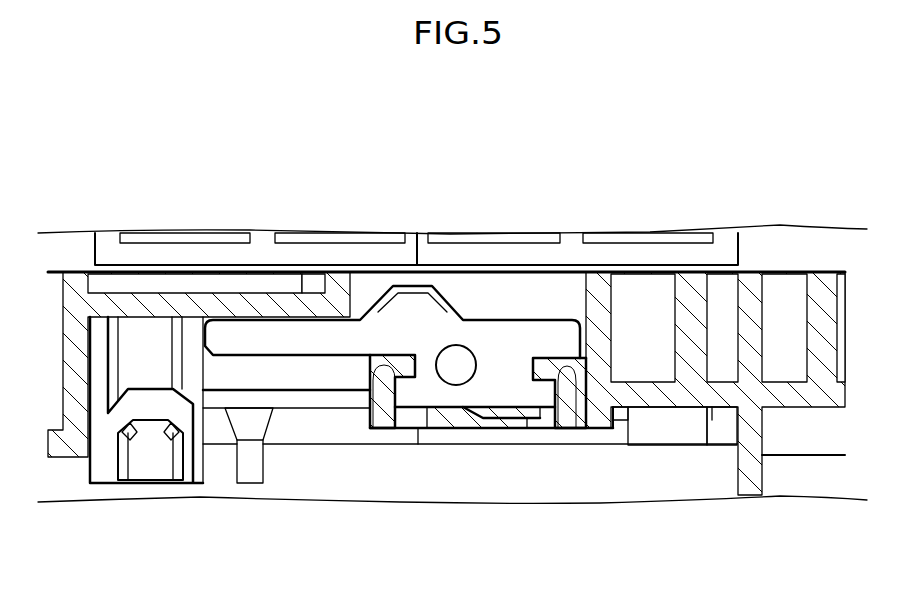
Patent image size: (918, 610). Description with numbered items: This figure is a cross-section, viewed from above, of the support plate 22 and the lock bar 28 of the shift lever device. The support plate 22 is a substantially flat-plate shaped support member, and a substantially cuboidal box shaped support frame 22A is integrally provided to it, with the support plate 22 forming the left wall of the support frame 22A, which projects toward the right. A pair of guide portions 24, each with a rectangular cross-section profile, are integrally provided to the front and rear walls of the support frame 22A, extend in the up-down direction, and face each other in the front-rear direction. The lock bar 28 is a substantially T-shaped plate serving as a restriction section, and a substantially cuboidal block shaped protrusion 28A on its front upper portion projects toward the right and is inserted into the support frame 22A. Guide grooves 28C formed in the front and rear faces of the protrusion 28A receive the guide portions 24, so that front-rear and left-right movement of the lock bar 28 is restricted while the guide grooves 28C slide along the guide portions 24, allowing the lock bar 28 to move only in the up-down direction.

The support plate 22 is at (146, 266).
The support frame 22A is at (470, 430).
The guide portions 24 is at (423, 365).
The lock bar 28 is at (297, 358).
The protrusion 28A is at (518, 418).
The guide grooves 28C is at (384, 405).